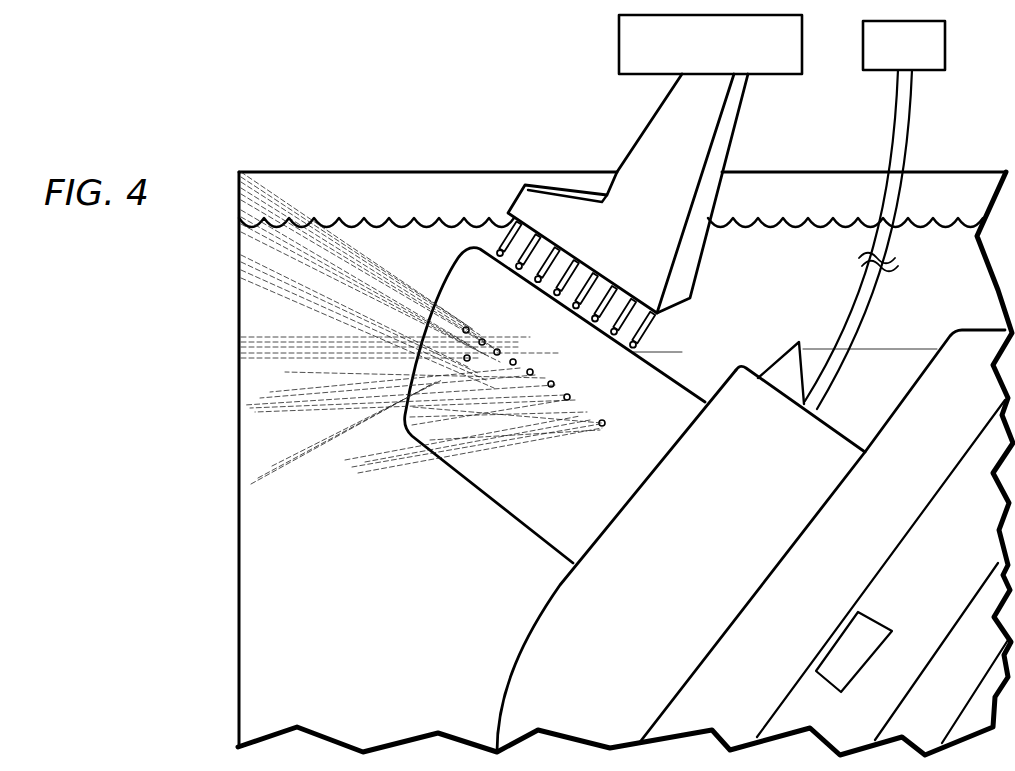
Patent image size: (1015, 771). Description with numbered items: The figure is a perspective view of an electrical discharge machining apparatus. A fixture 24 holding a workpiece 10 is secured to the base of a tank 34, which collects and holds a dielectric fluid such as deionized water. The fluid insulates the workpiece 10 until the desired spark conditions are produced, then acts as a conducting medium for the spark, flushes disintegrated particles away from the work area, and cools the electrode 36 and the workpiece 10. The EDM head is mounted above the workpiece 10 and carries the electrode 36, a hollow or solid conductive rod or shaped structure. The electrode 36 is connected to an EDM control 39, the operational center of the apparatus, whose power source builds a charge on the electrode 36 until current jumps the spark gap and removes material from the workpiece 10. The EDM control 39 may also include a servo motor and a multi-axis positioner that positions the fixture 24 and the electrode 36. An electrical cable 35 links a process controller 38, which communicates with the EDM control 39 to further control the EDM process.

The workpiece 10 is at (470, 283).
The fixture 24 is at (540, 608).
The tank 34 is at (320, 150).
The electrical cable 35 is at (863, 303).
The electrode 36 is at (677, 289).
The process controller 38 is at (904, 45).
The EDM control 39 is at (710, 44).